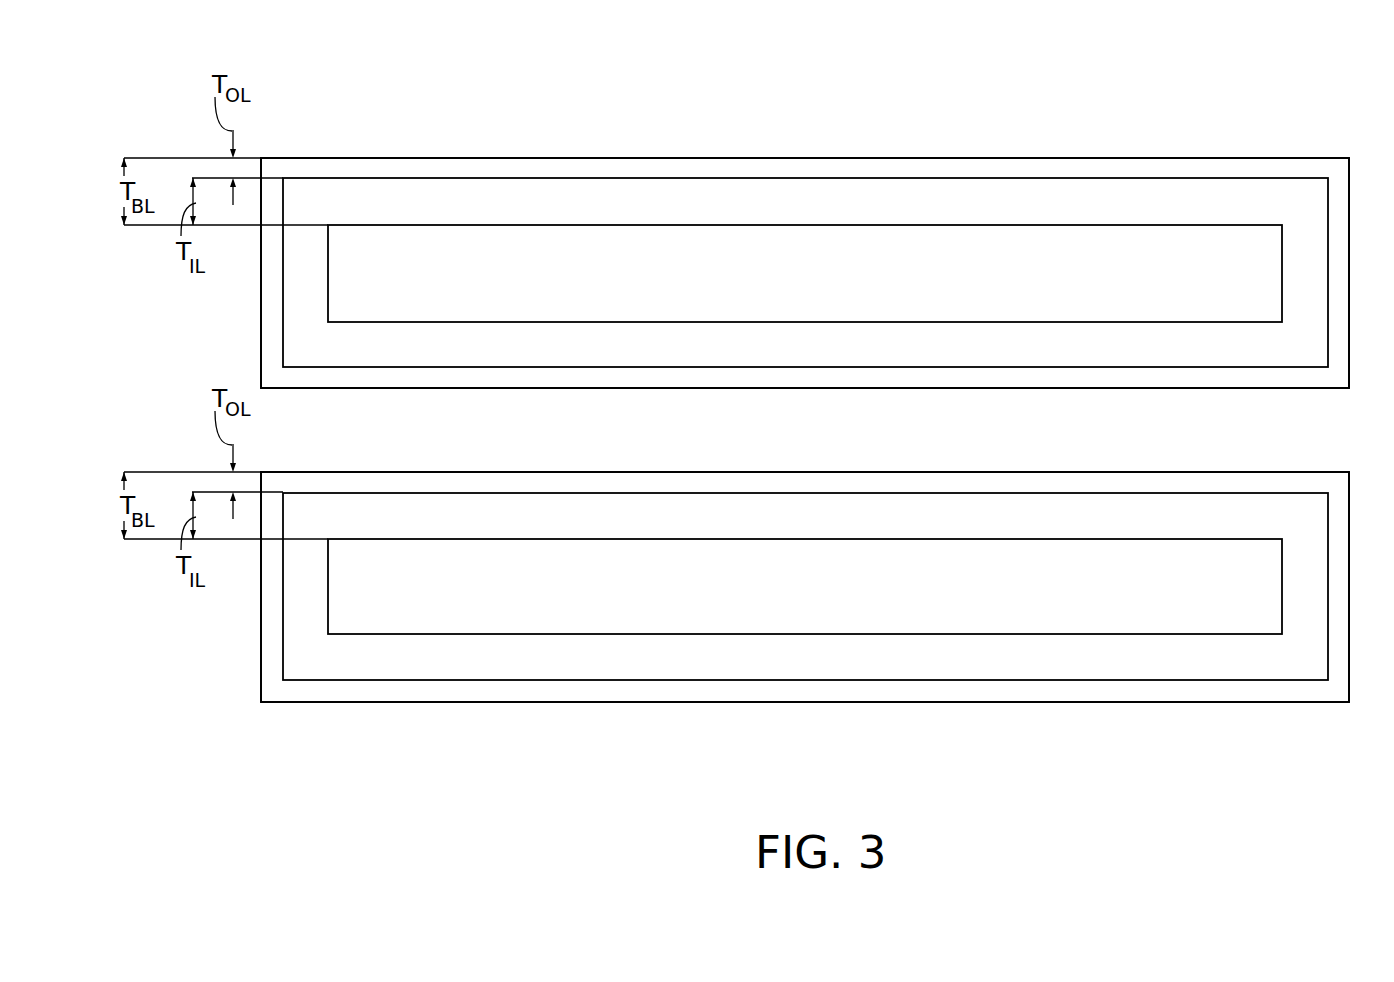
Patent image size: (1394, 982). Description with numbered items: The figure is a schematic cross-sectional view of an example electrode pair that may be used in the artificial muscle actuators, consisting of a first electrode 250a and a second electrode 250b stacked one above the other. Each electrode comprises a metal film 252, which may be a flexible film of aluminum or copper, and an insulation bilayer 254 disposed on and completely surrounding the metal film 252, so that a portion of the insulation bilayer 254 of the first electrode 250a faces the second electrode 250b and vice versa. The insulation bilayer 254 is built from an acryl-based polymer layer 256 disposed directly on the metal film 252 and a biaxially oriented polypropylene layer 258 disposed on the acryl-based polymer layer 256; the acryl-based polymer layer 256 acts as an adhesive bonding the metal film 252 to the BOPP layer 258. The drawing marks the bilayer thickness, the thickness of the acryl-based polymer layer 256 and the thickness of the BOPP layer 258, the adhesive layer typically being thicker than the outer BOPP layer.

The first electrode 250a is at (1297, 157).
The second electrode 250b is at (1297, 703).
The metal film 252 is at (1042, 233).
The insulation bilayer 254 is at (821, 157).
The acryl-based polymer layer 256 is at (972, 195).
The biaxially oriented polypropylene (BOPP) layer 258 is at (903, 163).